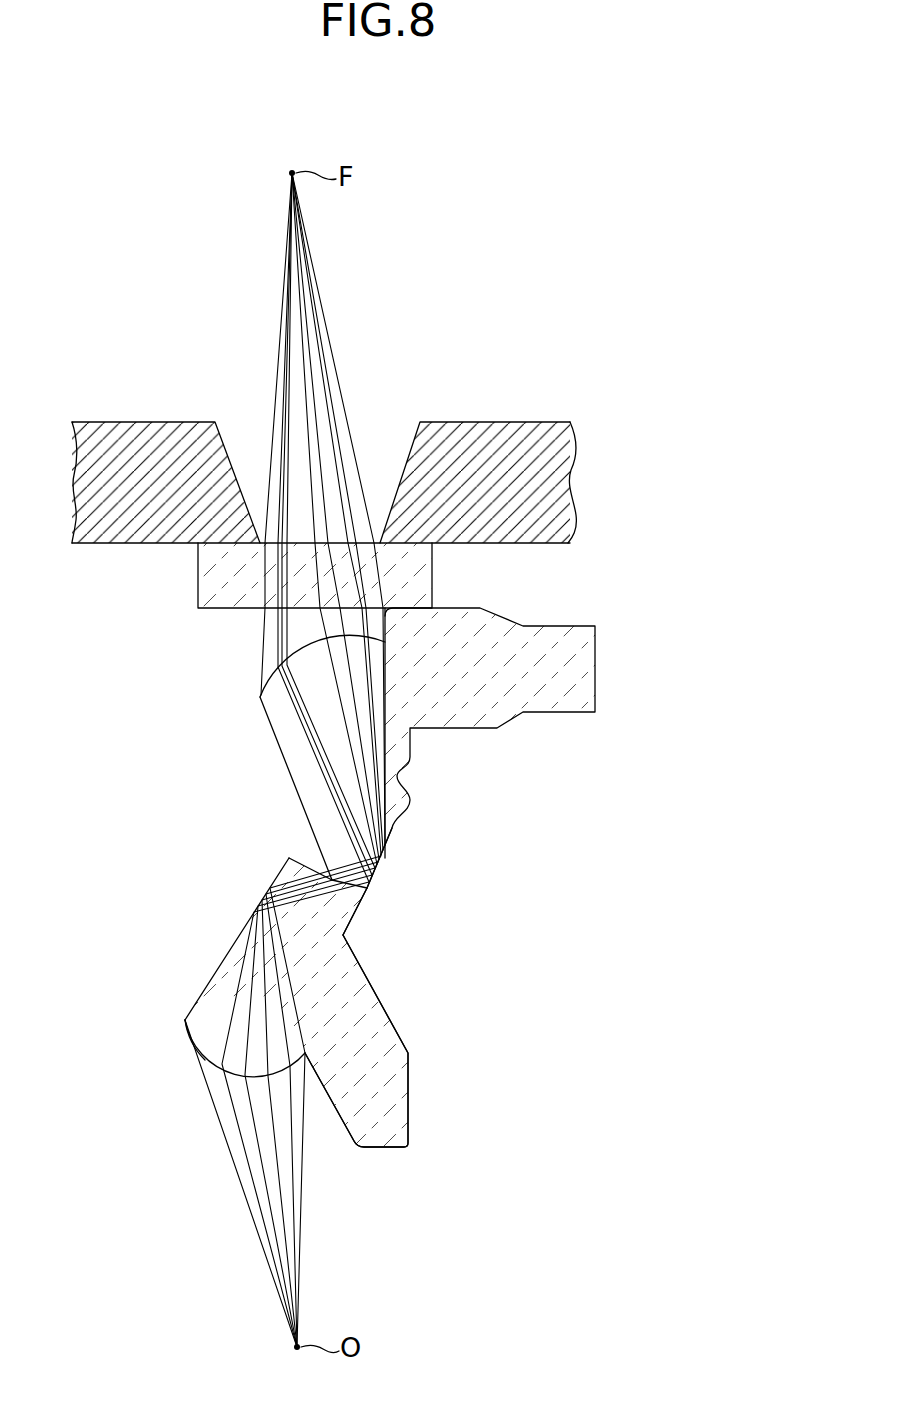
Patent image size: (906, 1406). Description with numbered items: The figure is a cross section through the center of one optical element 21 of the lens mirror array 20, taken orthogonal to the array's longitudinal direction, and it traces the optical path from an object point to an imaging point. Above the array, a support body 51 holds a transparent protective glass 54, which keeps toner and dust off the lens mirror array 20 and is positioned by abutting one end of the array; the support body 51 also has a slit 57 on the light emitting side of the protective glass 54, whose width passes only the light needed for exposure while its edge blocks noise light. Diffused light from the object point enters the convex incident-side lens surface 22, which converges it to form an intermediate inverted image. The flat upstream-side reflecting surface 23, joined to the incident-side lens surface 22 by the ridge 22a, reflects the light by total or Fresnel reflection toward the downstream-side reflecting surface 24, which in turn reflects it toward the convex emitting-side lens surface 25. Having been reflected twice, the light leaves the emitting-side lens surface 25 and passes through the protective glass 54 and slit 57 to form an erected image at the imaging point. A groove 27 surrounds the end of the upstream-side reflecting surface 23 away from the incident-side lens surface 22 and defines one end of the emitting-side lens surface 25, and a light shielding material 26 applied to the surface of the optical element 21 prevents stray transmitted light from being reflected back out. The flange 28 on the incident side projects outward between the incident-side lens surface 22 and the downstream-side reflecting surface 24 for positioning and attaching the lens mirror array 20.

The support body 51 is at (512, 425).
The slit 57 is at (268, 541).
The protective glass 54 is at (434, 575).
The lens mirror array 20 is at (469, 877).
The optical element 21 is at (390, 877).
The emitting-side lens surface 25 is at (260, 685).
The light shielding material 26 is at (272, 740).
The groove 27 is at (305, 845).
The downstream-side reflecting surface 24 is at (380, 862).
The upstream-side reflecting surface 23 is at (225, 956).
The ridge 22a is at (182, 1020).
The incident-side lens surface 22 is at (205, 1068).
The flange 28 is at (410, 1093).